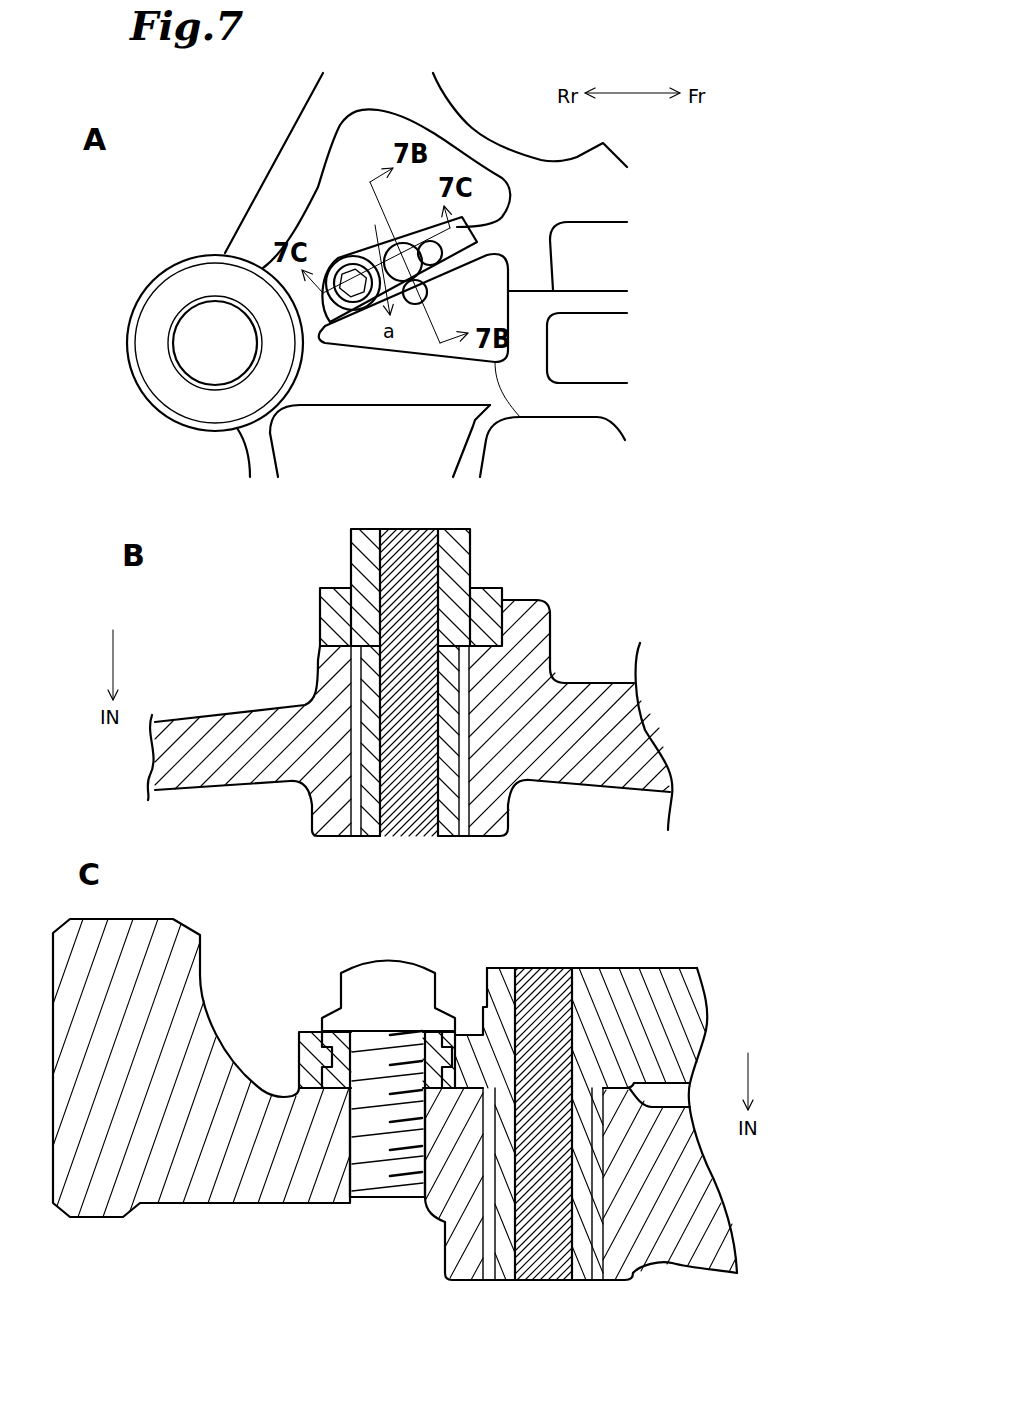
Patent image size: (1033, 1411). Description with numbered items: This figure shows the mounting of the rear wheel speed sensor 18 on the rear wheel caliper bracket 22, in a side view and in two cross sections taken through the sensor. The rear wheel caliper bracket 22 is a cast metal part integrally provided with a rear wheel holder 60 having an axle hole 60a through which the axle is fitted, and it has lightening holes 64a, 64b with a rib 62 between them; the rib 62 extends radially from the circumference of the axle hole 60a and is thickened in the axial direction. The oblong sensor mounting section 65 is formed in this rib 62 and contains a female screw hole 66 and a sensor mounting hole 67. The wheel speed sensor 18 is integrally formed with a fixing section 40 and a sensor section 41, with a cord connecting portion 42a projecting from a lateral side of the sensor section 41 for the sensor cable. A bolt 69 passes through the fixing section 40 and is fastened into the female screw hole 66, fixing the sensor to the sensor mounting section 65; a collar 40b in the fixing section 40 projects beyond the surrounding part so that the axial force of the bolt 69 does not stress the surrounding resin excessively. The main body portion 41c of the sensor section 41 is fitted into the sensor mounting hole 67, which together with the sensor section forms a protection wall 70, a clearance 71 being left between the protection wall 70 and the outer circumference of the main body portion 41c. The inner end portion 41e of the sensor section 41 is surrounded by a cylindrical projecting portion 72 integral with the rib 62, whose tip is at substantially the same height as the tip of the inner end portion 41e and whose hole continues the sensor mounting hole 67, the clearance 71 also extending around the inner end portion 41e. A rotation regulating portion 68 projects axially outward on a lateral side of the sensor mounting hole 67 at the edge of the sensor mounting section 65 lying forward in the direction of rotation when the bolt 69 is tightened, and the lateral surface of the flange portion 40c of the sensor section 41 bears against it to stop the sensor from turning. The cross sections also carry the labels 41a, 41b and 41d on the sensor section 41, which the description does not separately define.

The wheel speed sensor 18 is at (343, 250).
The rear wheel caliper bracket 22 is at (205, 245).
The fixing section 40 is at (312, 1032).
The collar 40b is at (312, 1080).
The flange portion 40c is at (351, 258).
The sensor section 41 is at (385, 245).
The bolt shaft 41a is at (418, 530).
The bolt head 41b is at (352, 530).
The main body portion 41c is at (370, 782).
The collar flange 41d is at (350, 680).
The inner end portion 41e is at (358, 824).
The cord connecting portion 42a is at (447, 260).
The rear wheel holder 60 is at (140, 367).
The axle hole 60a is at (207, 370).
The rib 62 is at (487, 237).
The lightening hole 64a is at (440, 95).
The lightening hole 64b is at (522, 418).
The sensor mounting section 65 is at (520, 668).
The female screw hole 66 is at (363, 1205).
The sensor mounting hole 67 is at (666, 1073).
The rotation regulating portion 68 is at (402, 300).
The bolt 69 is at (335, 262).
The protection wall 70 is at (462, 817).
The clearance 71 is at (490, 1257).
The projecting portion 72 is at (507, 815).